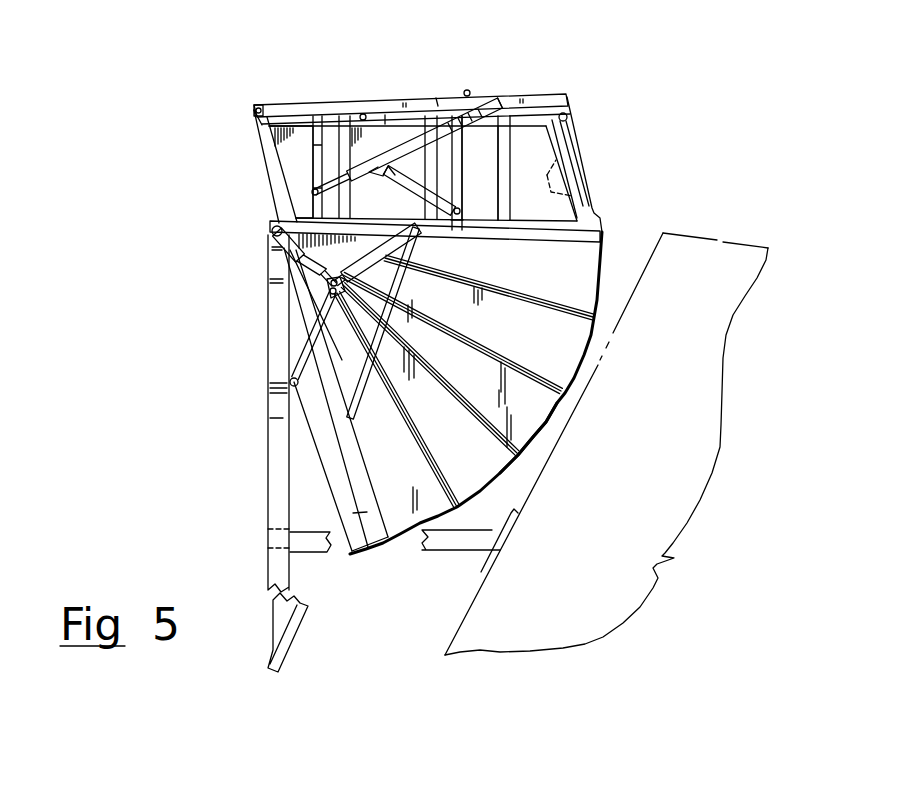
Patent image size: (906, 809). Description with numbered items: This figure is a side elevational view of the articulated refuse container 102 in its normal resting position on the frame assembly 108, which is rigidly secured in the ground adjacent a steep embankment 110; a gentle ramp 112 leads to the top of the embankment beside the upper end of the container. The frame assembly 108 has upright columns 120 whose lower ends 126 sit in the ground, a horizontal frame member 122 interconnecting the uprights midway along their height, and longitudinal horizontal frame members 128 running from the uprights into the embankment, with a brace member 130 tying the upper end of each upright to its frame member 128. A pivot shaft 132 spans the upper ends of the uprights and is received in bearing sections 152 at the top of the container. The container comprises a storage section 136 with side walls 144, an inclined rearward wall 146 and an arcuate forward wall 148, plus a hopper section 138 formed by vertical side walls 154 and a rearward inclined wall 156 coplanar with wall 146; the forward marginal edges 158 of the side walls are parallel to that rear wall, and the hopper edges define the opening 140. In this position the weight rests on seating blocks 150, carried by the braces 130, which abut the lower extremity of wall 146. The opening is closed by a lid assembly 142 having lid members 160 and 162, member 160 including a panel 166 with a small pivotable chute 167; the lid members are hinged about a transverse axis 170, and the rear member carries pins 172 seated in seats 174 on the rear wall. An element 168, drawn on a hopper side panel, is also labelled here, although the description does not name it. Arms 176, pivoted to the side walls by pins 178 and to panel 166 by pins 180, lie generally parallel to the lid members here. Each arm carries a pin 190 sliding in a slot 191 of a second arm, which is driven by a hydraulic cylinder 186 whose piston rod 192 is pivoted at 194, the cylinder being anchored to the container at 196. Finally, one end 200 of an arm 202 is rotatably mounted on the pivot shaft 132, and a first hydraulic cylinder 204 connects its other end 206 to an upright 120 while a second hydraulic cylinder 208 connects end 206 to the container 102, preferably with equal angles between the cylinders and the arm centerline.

The articulated refuse container 102 is at (635, 45).
The frame assembly 108 is at (260, 463).
The steep embankment 110 is at (467, 617).
The gentle ramp 112 is at (702, 235).
The upright columns 120 is at (266, 338).
The horizontal frame member 122 is at (278, 528).
The lower ends of uprights 126 is at (270, 612).
The longitudinal horizontal frame members 128 is at (443, 545).
The brace member 130 is at (315, 433).
The pivot shaft 132 is at (270, 226).
The storage section 136 is at (542, 437).
The hopper section 138 is at (596, 210).
The opening 140 is at (438, 98).
The lid assembly 142 is at (571, 95).
The side walls 144 is at (527, 332).
The inclined rearward wall 146 is at (332, 403).
The forward wall 148 is at (600, 347).
The seating blocks 150 is at (363, 540).
The bearing sections 152 is at (278, 215).
The vertical side walls 154 is at (492, 171).
The rearward inclined wall 156 is at (260, 147).
The forward marginal edges 158 is at (568, 128).
The lid member 160 is at (542, 88).
The lid member 162 is at (416, 94).
The panel 166 is at (593, 195).
The pivotable chute 167 is at (587, 168).
The left panel 168 is at (313, 190).
The transverse axis 170 is at (468, 90).
The pins 172 is at (254, 116).
The seat 174 is at (256, 106).
The arms 176 is at (385, 115).
The pin 178 is at (363, 103).
The pin 180 is at (568, 115).
The hydraulic cylinders 186 is at (402, 193).
The pin 190 is at (472, 97).
The elongated longitudinal slot 191 is at (485, 93).
The piston rod 192 is at (388, 176).
The pivotal connection 194 is at (378, 167).
The pivotal connection 196 is at (461, 211).
The end of arm 200 is at (282, 242).
The arm 202 is at (300, 266).
The first hydraulic cylinder 204 is at (307, 352).
The other end of arm 206 is at (323, 285).
The second hydraulic cylinder 208 is at (433, 253).